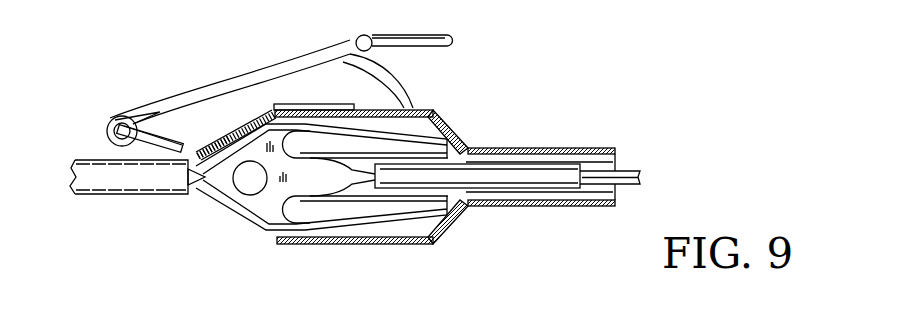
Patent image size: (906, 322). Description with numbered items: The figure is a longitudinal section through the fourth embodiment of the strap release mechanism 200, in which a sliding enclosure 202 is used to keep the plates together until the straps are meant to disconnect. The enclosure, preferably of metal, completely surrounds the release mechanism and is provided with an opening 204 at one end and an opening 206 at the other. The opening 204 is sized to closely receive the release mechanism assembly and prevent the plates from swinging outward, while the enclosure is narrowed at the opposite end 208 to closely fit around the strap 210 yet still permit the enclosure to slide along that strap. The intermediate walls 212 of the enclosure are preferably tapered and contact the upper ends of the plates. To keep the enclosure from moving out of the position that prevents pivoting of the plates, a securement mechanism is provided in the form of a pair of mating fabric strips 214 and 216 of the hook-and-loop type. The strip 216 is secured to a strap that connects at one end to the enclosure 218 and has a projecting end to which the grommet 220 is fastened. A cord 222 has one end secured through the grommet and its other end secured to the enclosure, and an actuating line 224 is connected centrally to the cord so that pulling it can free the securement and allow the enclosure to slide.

The strap release mechanism 200 is at (335, 245).
The sliding enclosure 202 is at (395, 245).
The opening 204 is at (277, 244).
The opening 206 is at (618, 160).
The narrowed opposite end 208 is at (527, 147).
The strap 210 is at (553, 190).
The intermediate walls 212 is at (449, 238).
The mating fabric strip 214 is at (222, 142).
The mating fabric strip 216 is at (236, 127).
The enclosure 218 is at (203, 185).
The grommet 220 is at (120, 124).
The cord 222 is at (184, 100).
The actuating line 224 is at (452, 44).